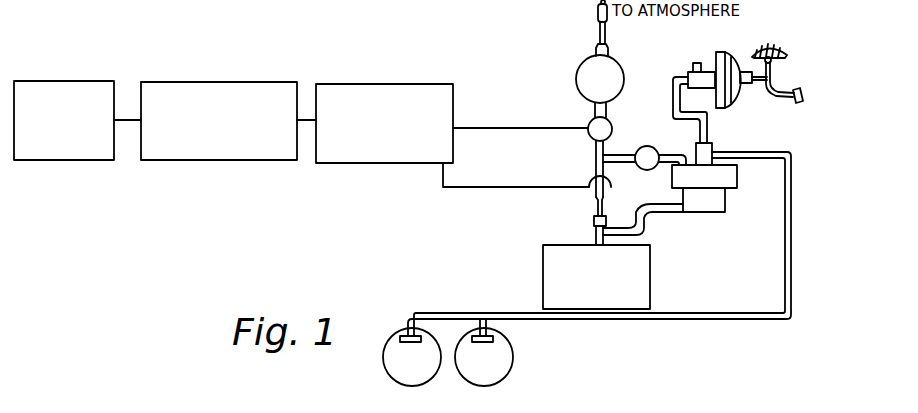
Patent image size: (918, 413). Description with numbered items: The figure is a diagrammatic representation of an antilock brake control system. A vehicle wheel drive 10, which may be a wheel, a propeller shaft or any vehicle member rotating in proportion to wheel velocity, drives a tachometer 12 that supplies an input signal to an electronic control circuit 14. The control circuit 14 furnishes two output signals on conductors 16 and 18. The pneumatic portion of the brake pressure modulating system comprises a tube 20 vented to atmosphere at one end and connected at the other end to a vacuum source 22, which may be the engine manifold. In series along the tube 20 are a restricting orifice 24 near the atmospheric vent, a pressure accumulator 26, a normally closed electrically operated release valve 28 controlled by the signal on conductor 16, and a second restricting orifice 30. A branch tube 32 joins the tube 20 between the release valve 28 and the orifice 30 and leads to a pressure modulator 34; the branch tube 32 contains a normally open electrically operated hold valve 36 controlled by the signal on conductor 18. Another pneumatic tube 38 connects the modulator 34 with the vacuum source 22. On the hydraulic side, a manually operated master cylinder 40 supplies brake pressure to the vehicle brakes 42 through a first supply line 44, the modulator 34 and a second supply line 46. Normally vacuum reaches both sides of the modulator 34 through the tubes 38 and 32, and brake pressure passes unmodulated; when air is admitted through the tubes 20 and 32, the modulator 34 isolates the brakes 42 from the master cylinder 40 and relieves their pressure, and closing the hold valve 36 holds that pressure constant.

The vehicle wheel drive 10 is at (92, 146).
The tachometer 12 is at (228, 148).
The electronic control circuit 14 is at (355, 163).
The conductor 16 is at (470, 128).
The conductor 18 is at (467, 187).
The tube 20 is at (597, 12).
The vacuum source 22 is at (650, 279).
The restricting orifice 24 is at (597, 38).
The pressure accumulator 26 is at (623, 82).
The release valve 28 is at (590, 122).
The second restricting orifice 30 is at (597, 205).
The branch tube 32 is at (608, 153).
The pressure modulator 34 is at (737, 180).
The hold valve 36 is at (647, 146).
The pneumatic tube 38 is at (650, 218).
The master cylinder 40 is at (726, 55).
The vehicle brakes 42 is at (420, 342).
The first supply line 44 is at (707, 123).
The second supply line 46 is at (792, 240).